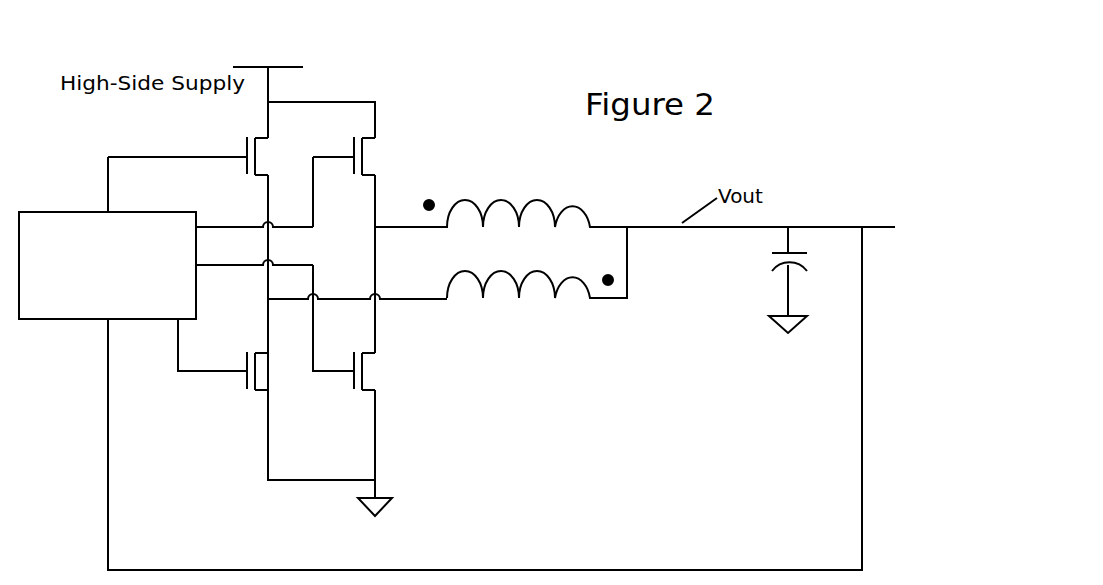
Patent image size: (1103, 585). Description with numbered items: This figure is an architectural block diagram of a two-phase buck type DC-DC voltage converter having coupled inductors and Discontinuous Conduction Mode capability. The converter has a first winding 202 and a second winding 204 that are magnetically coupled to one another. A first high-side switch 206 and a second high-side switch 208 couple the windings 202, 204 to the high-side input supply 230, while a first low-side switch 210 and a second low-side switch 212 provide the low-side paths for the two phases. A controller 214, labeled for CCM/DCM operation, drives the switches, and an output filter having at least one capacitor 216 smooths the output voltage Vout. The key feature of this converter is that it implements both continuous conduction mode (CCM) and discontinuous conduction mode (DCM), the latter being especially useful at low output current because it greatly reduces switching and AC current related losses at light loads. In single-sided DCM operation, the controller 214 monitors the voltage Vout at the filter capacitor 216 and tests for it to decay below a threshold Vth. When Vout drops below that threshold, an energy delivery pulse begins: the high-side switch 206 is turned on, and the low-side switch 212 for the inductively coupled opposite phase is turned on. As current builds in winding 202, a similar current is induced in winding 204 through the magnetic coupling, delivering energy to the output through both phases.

The first magnetically coupled winding 202 is at (503, 200).
The second magnetically coupled winding 204 is at (528, 302).
The first high-side switch 206 is at (375, 155).
The second high-side switch 208 is at (243, 160).
The first low-side switch 210 is at (367, 372).
The second low-side switch 212 is at (260, 401).
The controller 214 is at (107, 265).
The capacitor 216 is at (772, 273).
The high-side input supply 230 is at (280, 58).